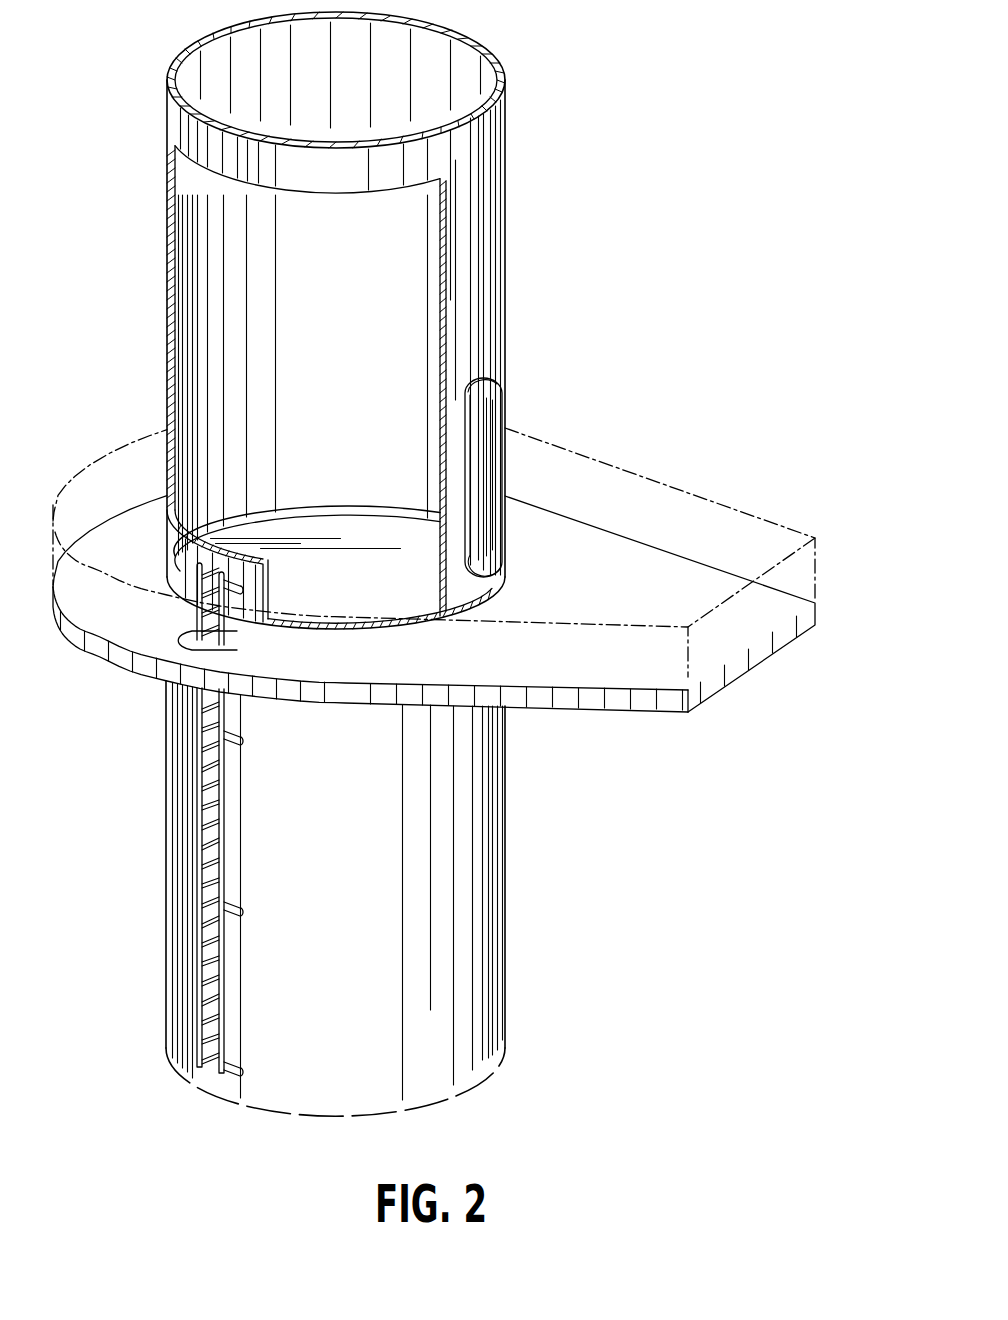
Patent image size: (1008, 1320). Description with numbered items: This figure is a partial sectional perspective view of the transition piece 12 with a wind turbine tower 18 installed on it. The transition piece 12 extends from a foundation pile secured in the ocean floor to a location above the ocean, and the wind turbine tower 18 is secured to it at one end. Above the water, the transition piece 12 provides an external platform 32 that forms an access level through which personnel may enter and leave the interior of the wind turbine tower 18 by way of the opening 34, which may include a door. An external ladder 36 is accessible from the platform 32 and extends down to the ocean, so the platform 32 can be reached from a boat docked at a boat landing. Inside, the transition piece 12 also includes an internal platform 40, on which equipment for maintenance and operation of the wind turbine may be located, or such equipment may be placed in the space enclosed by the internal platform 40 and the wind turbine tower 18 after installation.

The transition piece 12 is at (829, 583).
The wind turbine tower 18 is at (365, 564).
The external platform 32 is at (772, 645).
The opening 34 is at (494, 397).
The external ladder 36 is at (199, 850).
The internal platform 40 is at (354, 584).